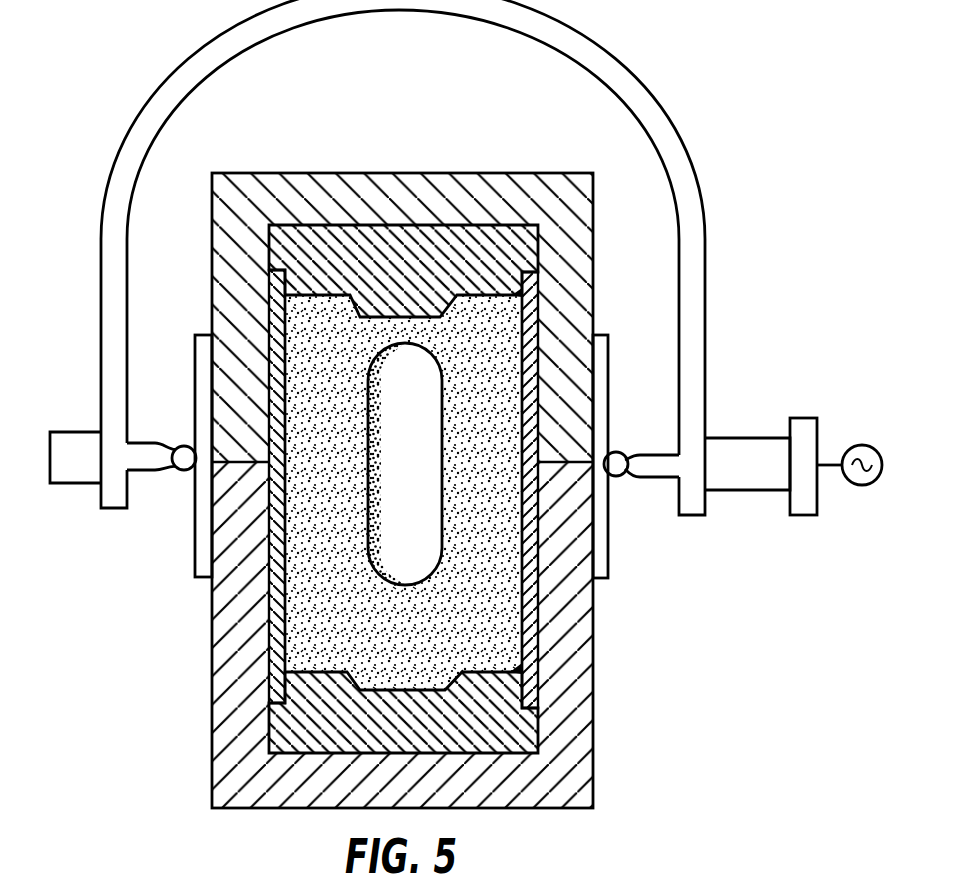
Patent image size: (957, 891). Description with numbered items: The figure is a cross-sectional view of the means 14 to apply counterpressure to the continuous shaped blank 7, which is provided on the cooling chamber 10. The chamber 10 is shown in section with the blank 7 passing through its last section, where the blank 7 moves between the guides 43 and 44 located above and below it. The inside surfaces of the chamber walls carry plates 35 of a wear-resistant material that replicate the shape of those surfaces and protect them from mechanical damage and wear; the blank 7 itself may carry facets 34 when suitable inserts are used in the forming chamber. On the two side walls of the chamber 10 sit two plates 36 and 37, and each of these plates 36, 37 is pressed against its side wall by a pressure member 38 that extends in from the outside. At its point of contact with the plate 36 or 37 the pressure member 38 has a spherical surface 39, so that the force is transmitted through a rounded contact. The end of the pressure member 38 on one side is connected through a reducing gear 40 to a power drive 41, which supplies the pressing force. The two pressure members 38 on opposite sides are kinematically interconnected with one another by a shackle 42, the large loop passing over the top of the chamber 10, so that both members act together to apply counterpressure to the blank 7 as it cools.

The continuous shaped blank 7 is at (462, 298).
The cooling chamber 10 is at (263, 192).
The means to apply counterpressure 14 is at (742, 350).
The facets 34 is at (515, 297).
The plates 35 is at (277, 632).
The plate 36 is at (600, 378).
The plate 37 is at (198, 376).
The pressure member 38 is at (63, 442).
The spherical surface 39 is at (197, 470).
The reducing gear 40 is at (803, 428).
The power drive 41 is at (858, 447).
The shackle 42 is at (688, 208).
The guide 43 is at (520, 735).
The guide 44 is at (340, 232).